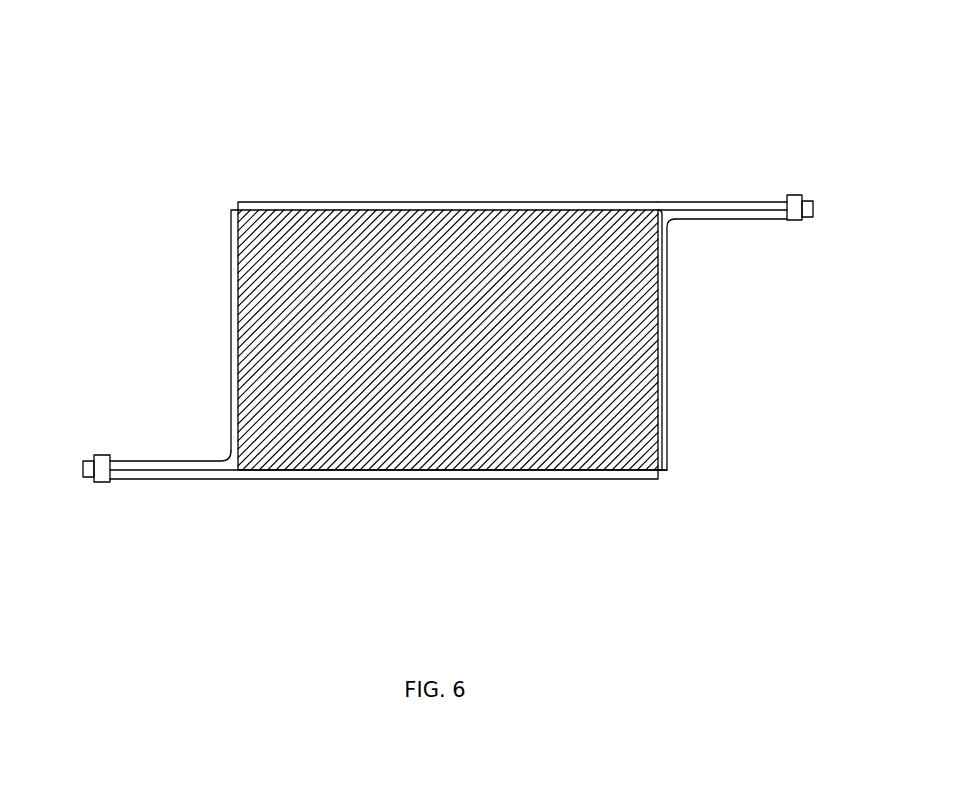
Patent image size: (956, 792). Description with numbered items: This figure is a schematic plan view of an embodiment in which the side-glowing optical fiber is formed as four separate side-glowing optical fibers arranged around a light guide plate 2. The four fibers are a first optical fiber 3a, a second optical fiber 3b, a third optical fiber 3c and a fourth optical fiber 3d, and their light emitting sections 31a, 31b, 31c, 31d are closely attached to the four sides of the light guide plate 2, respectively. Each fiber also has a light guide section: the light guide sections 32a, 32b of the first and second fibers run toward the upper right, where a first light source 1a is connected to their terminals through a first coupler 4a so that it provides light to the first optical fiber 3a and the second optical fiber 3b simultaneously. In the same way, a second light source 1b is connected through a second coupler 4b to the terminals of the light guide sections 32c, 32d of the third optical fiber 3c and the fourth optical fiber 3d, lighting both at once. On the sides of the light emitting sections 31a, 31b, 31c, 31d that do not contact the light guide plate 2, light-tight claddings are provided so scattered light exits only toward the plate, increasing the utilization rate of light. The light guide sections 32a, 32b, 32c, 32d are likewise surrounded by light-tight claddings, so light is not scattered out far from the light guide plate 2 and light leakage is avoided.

The light guide plate 2 is at (598, 412).
The first optical fiber 3a is at (660, 132).
The light emitting section 31a is at (630, 205).
The light guide section 32a is at (746, 205).
The second optical fiber 3b is at (758, 253).
The light emitting section 31b is at (663, 288).
The light guide section 32b is at (702, 212).
The third optical fiber 3c is at (132, 368).
The light emitting section 31c is at (232, 405).
The light guide section 32c is at (208, 462).
The fourth optical fiber 3d is at (205, 551).
The light emitting section 31d is at (280, 478).
The light guide section 32d is at (190, 478).
The first coupler 4a is at (797, 198).
The first light source 1a is at (808, 207).
The second coupler 4b is at (102, 470).
The second light source 1b is at (86, 475).